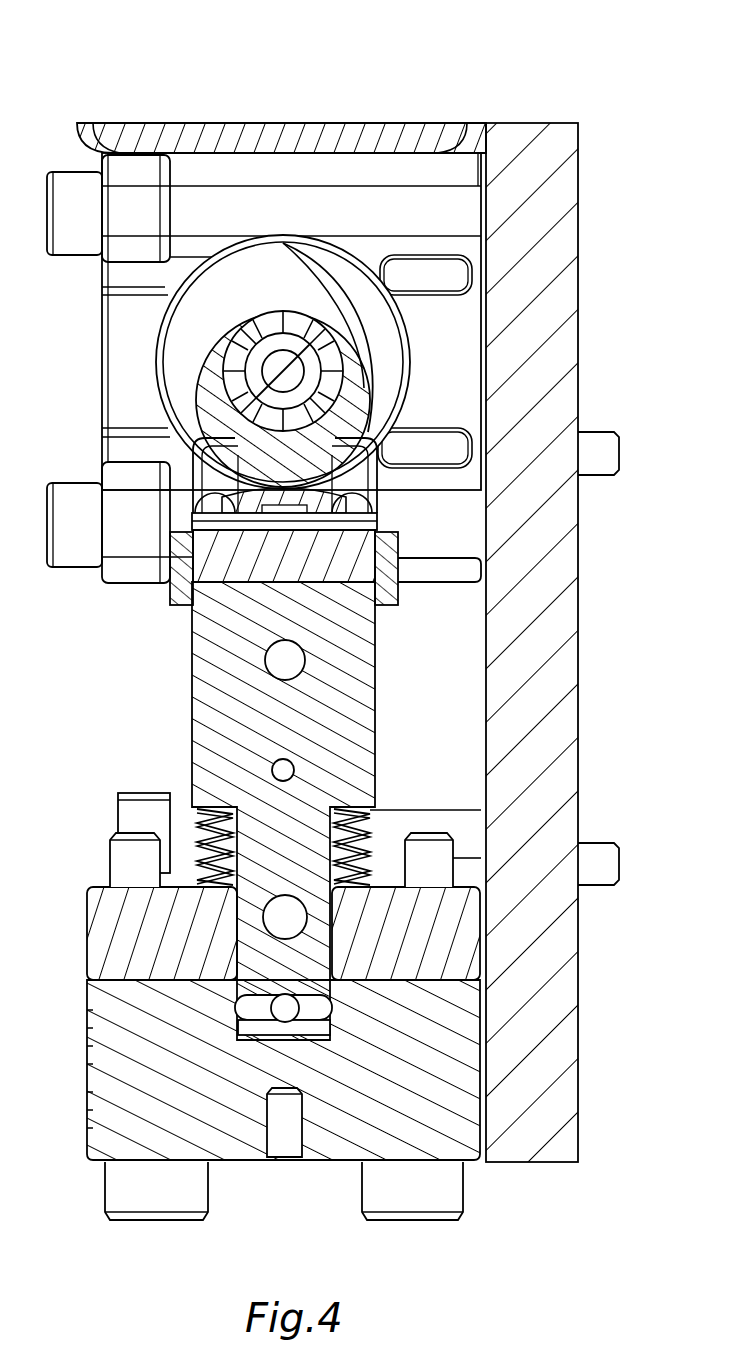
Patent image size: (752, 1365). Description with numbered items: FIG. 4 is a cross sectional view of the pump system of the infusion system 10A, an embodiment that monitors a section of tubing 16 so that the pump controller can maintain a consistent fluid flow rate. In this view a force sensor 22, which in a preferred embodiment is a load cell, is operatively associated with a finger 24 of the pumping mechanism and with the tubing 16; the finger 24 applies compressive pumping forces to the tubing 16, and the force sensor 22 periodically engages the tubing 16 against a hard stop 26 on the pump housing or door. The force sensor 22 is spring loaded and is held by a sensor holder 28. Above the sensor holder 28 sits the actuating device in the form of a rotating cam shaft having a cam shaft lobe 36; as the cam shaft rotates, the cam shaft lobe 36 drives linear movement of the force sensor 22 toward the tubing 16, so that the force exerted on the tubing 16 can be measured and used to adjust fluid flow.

The infusion system 10A is at (575, 75).
The tubing 16 is at (248, 1003).
The force sensor 22 is at (353, 543).
The finger 24 is at (310, 996).
The hard stop 26 is at (137, 1080).
The sensor holder 28 is at (350, 643).
The cam shaft lobe 36 is at (357, 393).